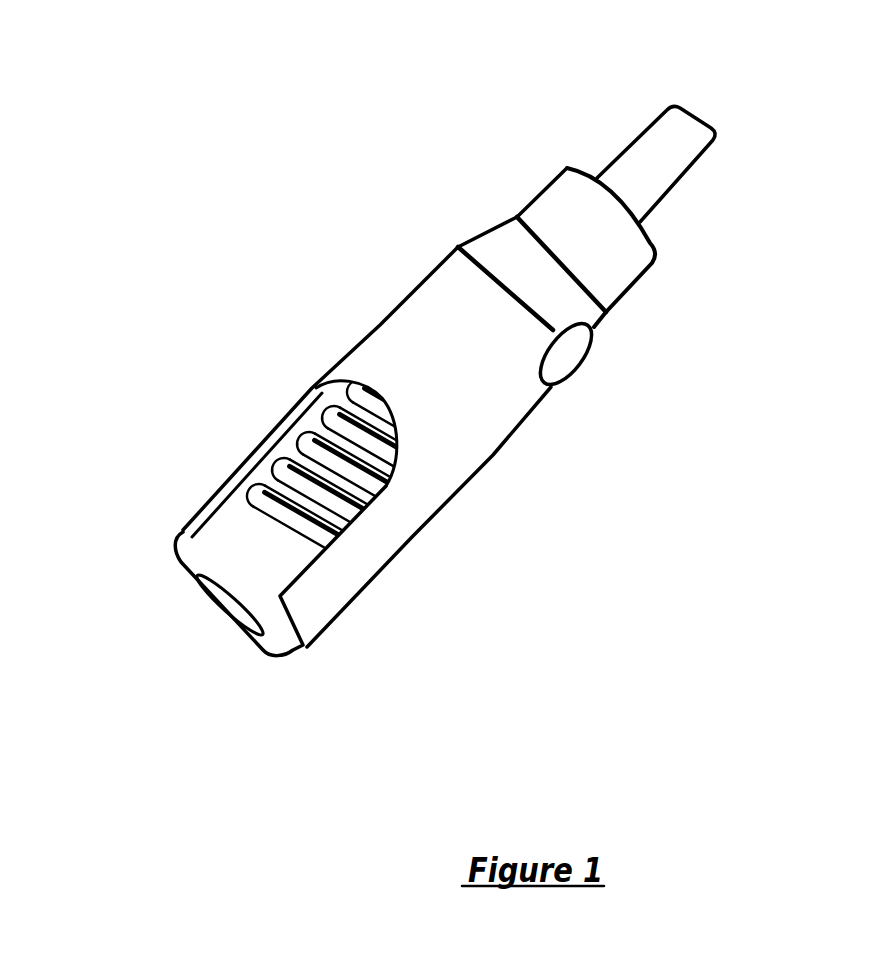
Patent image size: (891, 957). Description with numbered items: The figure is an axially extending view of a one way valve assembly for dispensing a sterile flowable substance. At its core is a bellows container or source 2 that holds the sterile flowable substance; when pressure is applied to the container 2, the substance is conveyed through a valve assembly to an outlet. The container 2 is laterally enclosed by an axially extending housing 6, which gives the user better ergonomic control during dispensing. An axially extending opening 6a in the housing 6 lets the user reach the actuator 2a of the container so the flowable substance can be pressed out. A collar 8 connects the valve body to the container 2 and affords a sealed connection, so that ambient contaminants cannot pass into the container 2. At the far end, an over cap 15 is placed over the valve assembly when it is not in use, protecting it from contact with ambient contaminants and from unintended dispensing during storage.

The bellows container 2 is at (380, 489).
The actuator 2a is at (188, 582).
The housing 6 is at (422, 282).
The window / cut-out in housing 6a is at (260, 452).
The collar 8 is at (643, 273).
The over cap 15 is at (700, 127).